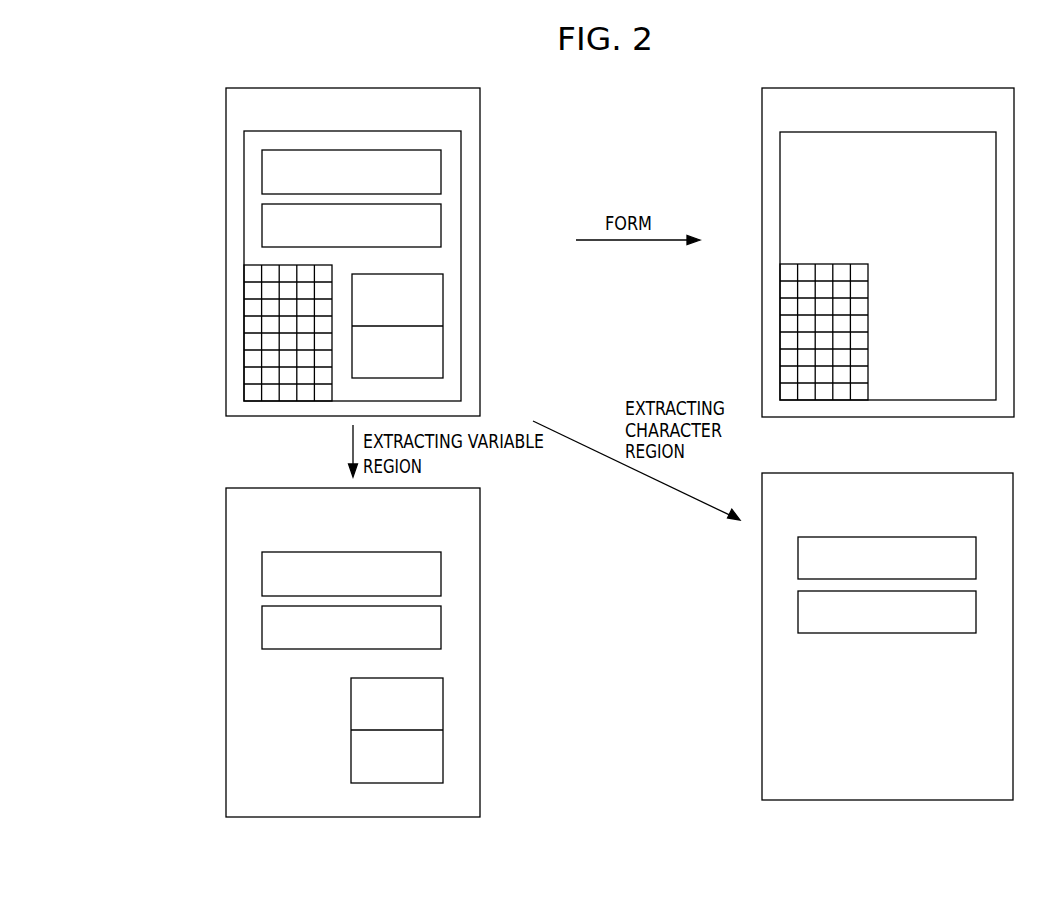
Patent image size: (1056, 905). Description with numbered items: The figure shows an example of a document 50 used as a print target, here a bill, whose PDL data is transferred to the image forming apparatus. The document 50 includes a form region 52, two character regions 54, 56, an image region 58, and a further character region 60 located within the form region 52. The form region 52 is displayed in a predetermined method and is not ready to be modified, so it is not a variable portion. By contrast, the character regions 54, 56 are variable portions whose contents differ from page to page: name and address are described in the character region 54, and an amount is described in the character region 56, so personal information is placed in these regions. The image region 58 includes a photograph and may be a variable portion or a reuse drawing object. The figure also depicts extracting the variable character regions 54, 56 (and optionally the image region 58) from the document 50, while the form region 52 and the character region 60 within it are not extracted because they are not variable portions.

The document 50 is at (441, 71).
The form region 52 is at (283, 88).
The character region 54 is at (441, 172).
The character region 56 is at (441, 222).
The image region 58 is at (443, 303).
The character region 60 is at (244, 306).